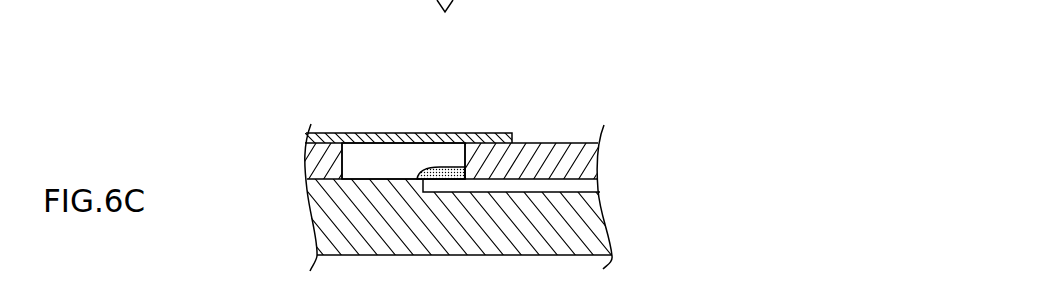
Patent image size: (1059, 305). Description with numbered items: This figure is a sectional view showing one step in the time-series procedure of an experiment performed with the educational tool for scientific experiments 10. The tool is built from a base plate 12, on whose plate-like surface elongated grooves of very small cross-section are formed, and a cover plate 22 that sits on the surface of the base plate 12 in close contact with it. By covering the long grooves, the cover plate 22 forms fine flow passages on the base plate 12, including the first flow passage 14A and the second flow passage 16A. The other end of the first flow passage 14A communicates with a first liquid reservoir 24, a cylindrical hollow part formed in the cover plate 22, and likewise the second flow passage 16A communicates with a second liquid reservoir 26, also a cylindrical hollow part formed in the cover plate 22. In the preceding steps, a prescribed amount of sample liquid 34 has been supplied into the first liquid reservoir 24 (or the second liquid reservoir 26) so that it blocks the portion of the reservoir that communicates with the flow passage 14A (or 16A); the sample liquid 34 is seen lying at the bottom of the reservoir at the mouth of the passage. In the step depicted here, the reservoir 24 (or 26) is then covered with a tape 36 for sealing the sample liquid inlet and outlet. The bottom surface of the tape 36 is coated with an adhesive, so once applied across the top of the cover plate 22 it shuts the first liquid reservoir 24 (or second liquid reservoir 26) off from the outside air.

The educational tool for scientific experiments 10 is at (496, 145).
The base plate 12 is at (597, 228).
The first flow passage 14A is at (607, 183).
The second flow passage 16A is at (600, 183).
The cover plate 22 is at (597, 165).
The first liquid reservoir 24 is at (380, 117).
The second liquid reservoir 26 is at (358, 161).
The sample liquid 34 is at (440, 168).
The tape 36 is at (418, 136).